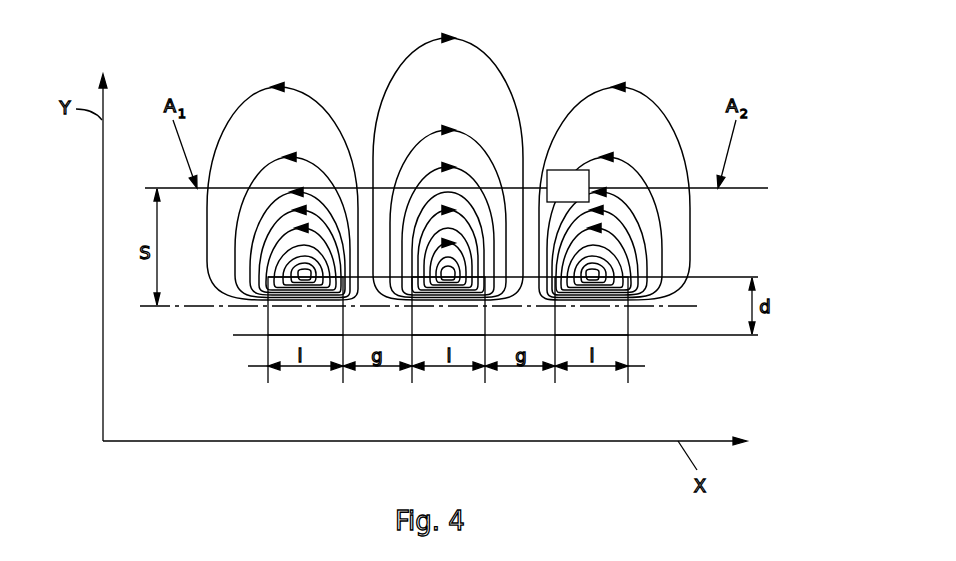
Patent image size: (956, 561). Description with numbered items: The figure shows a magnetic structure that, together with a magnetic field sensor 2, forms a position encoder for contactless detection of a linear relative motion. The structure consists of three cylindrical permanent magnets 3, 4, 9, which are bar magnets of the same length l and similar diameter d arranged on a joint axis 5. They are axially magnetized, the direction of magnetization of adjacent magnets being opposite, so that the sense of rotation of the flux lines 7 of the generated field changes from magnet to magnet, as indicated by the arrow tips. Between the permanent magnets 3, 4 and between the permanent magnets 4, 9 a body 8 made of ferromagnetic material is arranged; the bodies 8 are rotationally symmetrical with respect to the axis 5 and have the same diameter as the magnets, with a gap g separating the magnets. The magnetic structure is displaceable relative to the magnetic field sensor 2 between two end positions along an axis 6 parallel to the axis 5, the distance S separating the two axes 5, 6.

The magnetic field sensor 2 is at (573, 178).
The permanent magnet 3 is at (312, 320).
The permanent magnet 4 is at (458, 320).
The axis 5 is at (203, 309).
The axis 6 is at (170, 187).
The flux lines 7 is at (405, 64).
The body 8 is at (363, 320).
The permanent magnet 9 is at (603, 322).